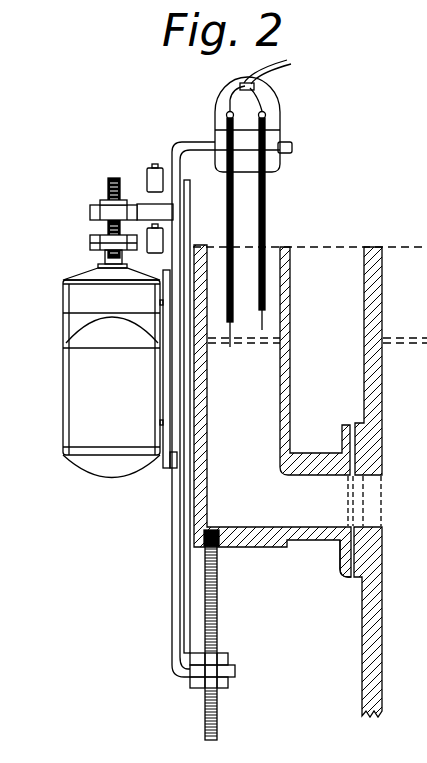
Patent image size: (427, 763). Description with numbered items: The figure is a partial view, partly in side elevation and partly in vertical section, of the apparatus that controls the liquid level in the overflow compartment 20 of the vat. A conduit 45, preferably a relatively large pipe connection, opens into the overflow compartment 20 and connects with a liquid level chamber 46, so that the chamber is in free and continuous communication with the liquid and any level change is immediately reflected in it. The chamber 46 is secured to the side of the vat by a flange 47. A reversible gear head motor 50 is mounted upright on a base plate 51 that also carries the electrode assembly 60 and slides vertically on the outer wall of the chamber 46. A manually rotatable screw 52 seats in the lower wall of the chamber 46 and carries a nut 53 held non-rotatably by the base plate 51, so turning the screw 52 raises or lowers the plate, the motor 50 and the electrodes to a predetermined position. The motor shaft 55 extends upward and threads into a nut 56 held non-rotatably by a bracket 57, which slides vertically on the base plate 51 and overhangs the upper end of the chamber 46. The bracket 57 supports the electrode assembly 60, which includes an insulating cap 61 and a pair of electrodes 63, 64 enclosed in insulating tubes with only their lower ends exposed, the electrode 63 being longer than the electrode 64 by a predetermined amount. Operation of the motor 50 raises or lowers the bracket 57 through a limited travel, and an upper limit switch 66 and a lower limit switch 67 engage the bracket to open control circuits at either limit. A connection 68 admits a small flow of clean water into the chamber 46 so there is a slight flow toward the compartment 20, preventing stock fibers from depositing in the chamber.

The overflow compartment 20 is at (400, 392).
The conduit 45 is at (313, 486).
The liquid level chamber 46 is at (272, 366).
The flange 47 is at (338, 560).
The reversible gear head motor 50 is at (63, 383).
The base plate 51 is at (183, 490).
The manually rotatable screw 52 is at (217, 615).
The nut 53 is at (229, 682).
The motor shaft 55 is at (107, 185).
The nut 56 is at (91, 212).
The bracket 57 is at (197, 124).
The electrode assembly 60 is at (253, 104).
The cap 61 is at (234, 93).
The electrode 63 is at (236, 191).
The electrode 64 is at (267, 210).
The upper limit switch 66 is at (151, 165).
The lower limit switch 67 is at (166, 246).
The connection 68 is at (290, 254).